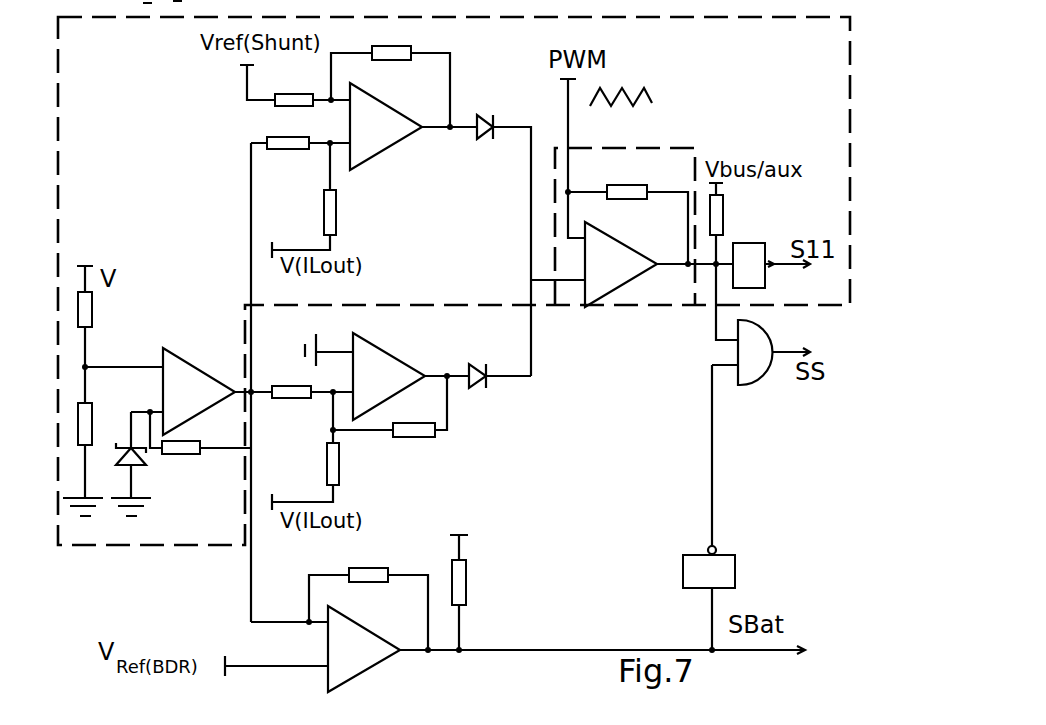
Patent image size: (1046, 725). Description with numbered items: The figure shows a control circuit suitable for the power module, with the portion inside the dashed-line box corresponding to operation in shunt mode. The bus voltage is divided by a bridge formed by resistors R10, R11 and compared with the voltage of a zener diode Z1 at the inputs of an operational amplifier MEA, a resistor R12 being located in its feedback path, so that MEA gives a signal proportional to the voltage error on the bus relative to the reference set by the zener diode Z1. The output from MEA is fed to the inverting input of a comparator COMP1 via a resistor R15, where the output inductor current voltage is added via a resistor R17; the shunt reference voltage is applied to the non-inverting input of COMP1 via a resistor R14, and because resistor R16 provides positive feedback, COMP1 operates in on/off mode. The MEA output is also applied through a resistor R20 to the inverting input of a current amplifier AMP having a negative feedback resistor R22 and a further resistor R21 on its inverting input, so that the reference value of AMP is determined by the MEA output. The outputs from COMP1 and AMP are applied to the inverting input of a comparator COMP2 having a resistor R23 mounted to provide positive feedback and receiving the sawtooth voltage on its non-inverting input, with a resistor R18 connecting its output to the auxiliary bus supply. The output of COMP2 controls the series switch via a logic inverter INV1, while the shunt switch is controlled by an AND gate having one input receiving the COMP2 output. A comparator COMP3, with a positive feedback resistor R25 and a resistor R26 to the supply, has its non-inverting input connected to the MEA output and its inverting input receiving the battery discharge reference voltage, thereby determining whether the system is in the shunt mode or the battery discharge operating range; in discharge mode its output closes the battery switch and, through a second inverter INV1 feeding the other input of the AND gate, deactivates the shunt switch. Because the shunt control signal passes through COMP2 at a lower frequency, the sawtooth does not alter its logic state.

The bridge resistor R10 is at (105, 347).
The bridge resistor R11 is at (95, 461).
The resistor R12 is at (200, 453).
The resistor R14 is at (309, 83).
The resistor R15 is at (300, 161).
The positive feedback resistor R16 is at (390, 88).
The resistor R17 is at (327, 199).
The resistor R18 is at (736, 261).
The resistor R20 is at (312, 409).
The resistor R21 is at (328, 451).
The negative feedback resistor R22 is at (390, 424).
The positive feedback resistor R23 is at (628, 226).
The positive feedback resistor R25 is at (370, 610).
The resistor R26 is at (480, 589).
The zener diode Z1 is at (140, 479).
The operational amplifier MEA is at (201, 391).
The current amplifier AMP is at (411, 376).
The comparator COMP1 is at (373, 148).
The comparator COMP2 is at (620, 288).
The comparator COMP3 is at (360, 667).
The logic inverter INV1 is at (752, 250).
The AND gate AND is at (757, 370).